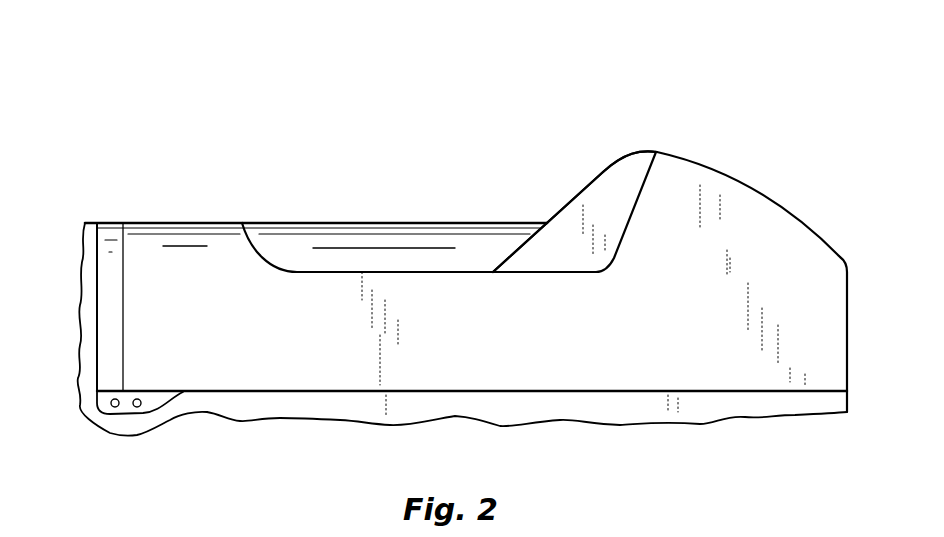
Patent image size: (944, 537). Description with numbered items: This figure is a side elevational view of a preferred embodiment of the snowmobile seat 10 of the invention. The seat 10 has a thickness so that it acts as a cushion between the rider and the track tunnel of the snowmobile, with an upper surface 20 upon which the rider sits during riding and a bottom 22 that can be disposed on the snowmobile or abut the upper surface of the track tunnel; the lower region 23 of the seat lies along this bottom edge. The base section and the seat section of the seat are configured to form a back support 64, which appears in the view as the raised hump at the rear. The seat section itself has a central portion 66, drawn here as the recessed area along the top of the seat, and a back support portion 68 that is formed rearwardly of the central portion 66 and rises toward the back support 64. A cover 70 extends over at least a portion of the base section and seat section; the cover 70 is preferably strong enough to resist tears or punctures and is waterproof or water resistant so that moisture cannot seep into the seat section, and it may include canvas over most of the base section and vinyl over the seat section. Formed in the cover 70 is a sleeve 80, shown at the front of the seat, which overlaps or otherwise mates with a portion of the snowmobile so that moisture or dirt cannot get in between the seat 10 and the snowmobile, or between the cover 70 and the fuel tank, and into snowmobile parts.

The snowmobile seat 10 is at (540, 92).
The upper surface 20 is at (225, 222).
The bottom 22 is at (226, 394).
The hull bottom surface 23 is at (489, 406).
The back support 64 is at (645, 145).
The central portion 66 is at (385, 222).
The back support portion 68 is at (600, 172).
The cover 70 is at (82, 380).
The sleeve 80 is at (92, 258).